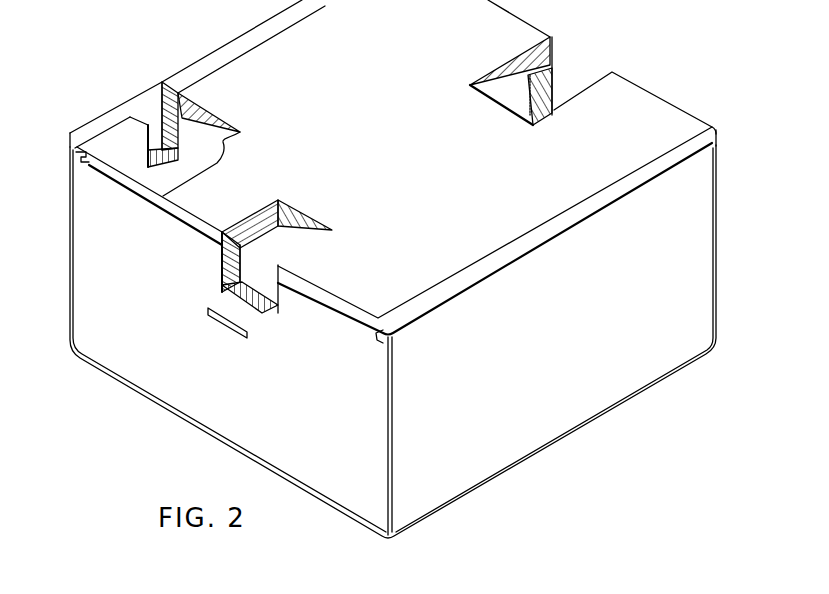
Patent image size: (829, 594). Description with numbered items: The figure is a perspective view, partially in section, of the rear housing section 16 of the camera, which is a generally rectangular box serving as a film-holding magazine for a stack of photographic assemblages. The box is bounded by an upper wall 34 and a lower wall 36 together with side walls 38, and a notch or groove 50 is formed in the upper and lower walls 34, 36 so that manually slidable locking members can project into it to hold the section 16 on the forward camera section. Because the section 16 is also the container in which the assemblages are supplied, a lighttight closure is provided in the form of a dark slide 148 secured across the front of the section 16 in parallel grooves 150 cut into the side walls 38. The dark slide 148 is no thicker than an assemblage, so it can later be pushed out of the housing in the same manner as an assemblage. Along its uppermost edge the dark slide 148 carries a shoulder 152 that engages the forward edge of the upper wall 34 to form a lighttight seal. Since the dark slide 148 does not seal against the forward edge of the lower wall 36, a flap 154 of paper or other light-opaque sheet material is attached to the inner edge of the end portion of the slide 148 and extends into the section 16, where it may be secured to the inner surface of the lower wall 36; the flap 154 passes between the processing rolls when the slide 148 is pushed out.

The rear housing section 16 is at (205, 432).
The upper wall 34 is at (278, 394).
The side walls 38 is at (157, 143).
The lower wall 36 is at (553, 92).
The dark slide 148 is at (389, 150).
The parallel grooves 150 is at (80, 158).
The shoulder 152 is at (246, 238).
The flap 154 is at (523, 85).
The notches or grooves 50 is at (226, 330).